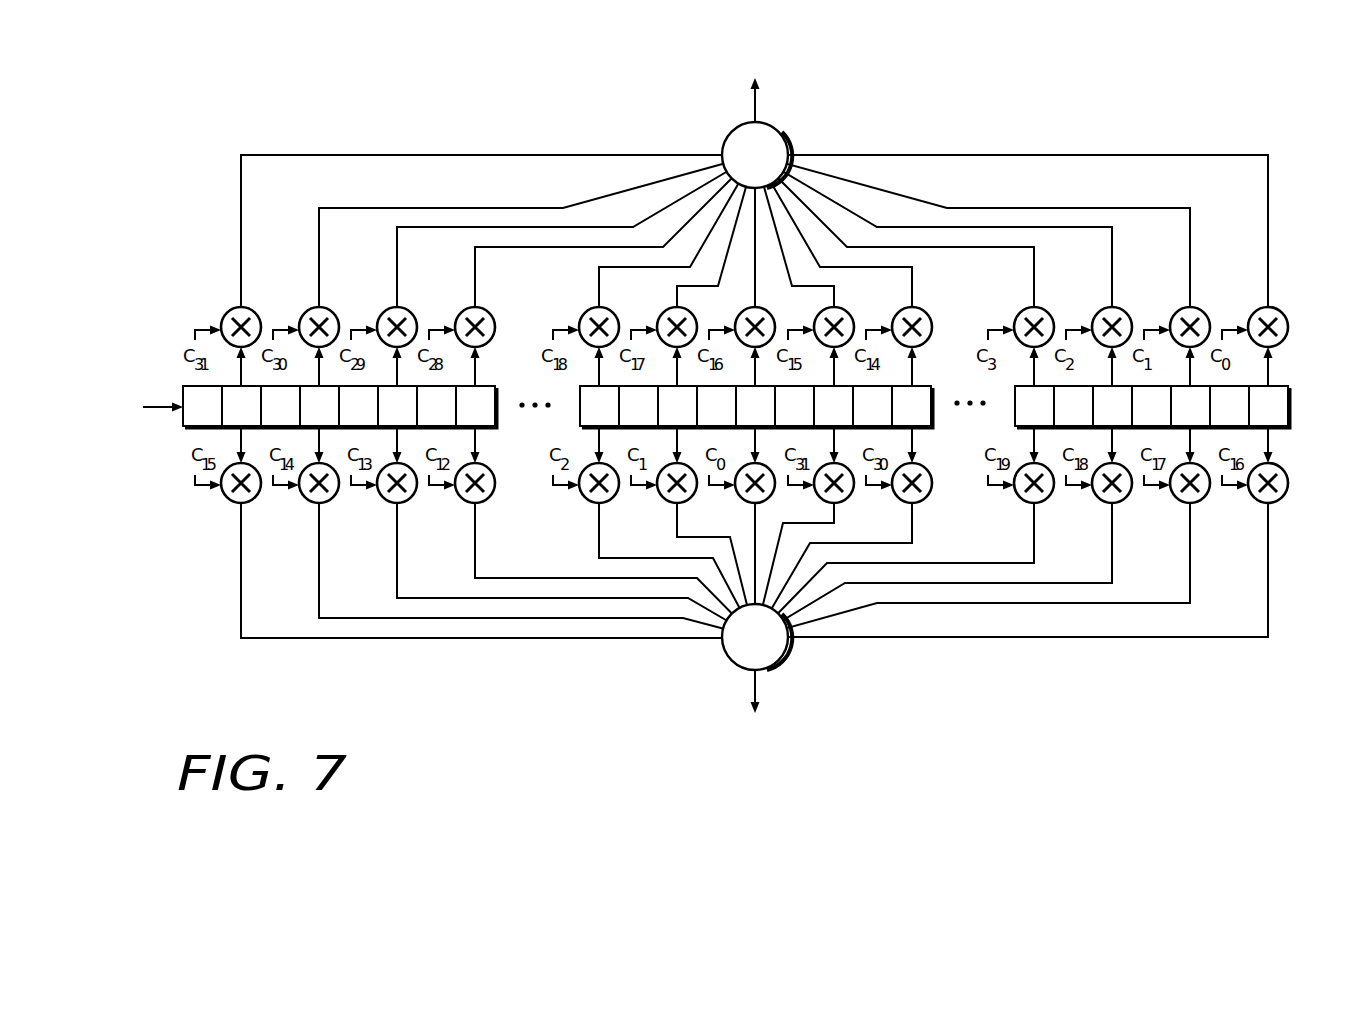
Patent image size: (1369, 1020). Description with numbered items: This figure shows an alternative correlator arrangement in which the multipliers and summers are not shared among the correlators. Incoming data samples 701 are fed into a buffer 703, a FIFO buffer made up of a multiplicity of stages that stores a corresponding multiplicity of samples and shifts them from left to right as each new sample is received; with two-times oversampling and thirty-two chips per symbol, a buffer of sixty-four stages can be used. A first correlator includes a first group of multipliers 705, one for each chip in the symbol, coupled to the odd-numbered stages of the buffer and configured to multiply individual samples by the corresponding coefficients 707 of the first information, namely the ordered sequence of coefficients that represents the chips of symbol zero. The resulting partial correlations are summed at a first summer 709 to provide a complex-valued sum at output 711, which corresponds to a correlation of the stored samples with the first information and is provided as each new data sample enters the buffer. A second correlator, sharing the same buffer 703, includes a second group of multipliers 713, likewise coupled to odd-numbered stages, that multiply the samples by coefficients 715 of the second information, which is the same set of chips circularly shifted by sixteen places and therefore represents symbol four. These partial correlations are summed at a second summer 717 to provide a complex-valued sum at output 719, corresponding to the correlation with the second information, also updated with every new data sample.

The data samples 701 is at (104, 378).
The buffer 703 is at (497, 427).
The multipliers 705 is at (1304, 307).
The coefficients 707 is at (1223, 296).
The summer 709 is at (786, 141).
The correlation output 711 is at (604, 52).
The multipliers 713 is at (1305, 495).
The coefficients 715 is at (1229, 512).
The summer 717 is at (783, 660).
The correlation output 719 is at (598, 727).